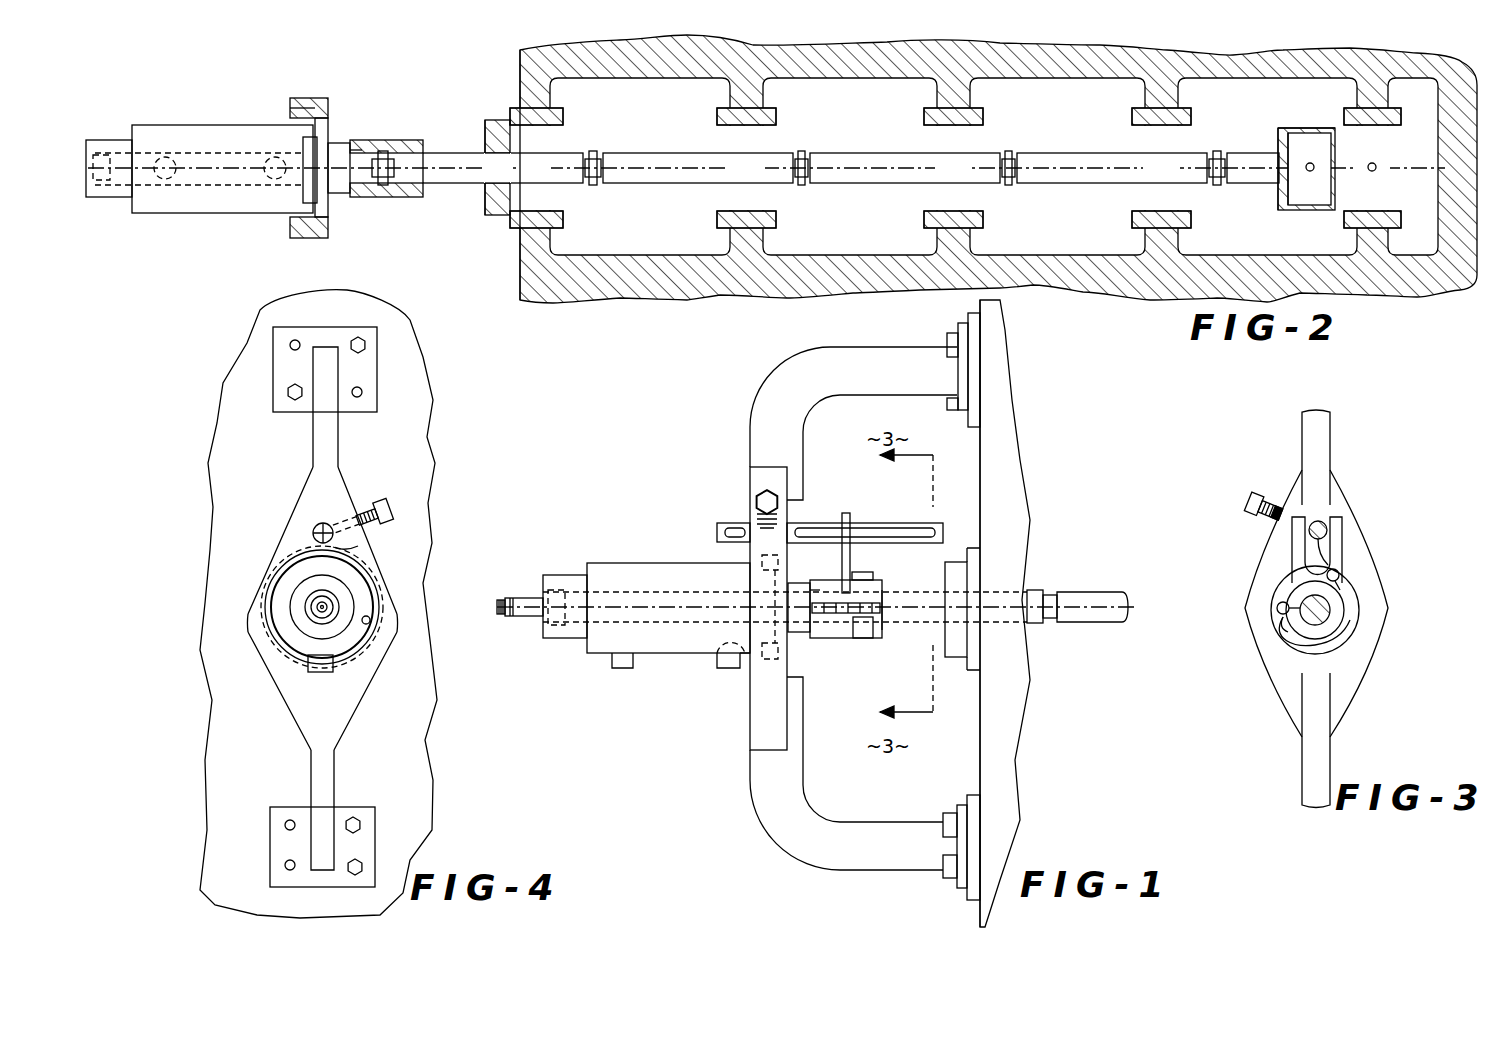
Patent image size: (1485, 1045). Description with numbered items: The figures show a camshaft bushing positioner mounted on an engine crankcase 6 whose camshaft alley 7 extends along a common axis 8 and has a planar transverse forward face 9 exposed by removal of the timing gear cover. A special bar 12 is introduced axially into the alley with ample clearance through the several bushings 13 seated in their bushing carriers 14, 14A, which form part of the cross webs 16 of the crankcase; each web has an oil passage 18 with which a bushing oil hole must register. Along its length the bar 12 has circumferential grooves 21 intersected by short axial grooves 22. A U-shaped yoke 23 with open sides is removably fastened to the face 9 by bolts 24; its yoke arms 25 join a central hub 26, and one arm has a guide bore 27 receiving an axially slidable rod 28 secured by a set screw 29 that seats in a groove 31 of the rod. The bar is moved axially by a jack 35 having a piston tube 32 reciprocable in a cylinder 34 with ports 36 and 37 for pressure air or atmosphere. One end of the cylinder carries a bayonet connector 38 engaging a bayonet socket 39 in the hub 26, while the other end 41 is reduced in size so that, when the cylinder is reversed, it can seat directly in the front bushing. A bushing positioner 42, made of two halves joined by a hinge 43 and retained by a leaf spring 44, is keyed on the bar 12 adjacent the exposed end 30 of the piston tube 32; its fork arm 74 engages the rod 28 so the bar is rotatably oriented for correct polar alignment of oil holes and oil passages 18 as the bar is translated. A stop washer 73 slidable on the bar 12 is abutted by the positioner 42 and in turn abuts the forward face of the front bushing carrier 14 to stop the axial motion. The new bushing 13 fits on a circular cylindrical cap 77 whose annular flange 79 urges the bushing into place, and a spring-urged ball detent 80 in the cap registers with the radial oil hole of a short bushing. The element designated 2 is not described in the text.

In FIG. 4, the wall plate 2 is at (318, 604).
In FIG. 2, the crankcase 6 is at (711, 299).
In FIG. 1, the crankcase 6 is at (1022, 768).
In FIG. 2, the camshaft alley 7 is at (608, 192).
In FIG. 2, the common axis 8 is at (850, 184).
In FIG. 1, the common axis 8 is at (1110, 592).
In FIG. 2, the forward face 9 is at (520, 268).
In FIG. 1, the forward face 9 is at (978, 762).
In FIG. 2, the bar 12 is at (1095, 187).
In FIG. 1, the bar 12 is at (1118, 633).
In FIG. 3, the bar 12 is at (1335, 617).
In FIG. 2, the bushing 13 is at (1326, 128).
In FIG. 2, the bushing carrier 14 is at (566, 118).
In FIG. 2, the bearing hub 14A is at (990, 118).
In FIG. 2, the cross web 16 is at (933, 90).
In FIG. 2, the oil passage 18 is at (1371, 172).
In FIG. 2, the circumferential groove 21 is at (392, 182).
In FIG. 1, the circumferential groove 21 is at (1053, 592).
In FIG. 2, the axial groove 22 is at (386, 158).
In FIG. 1, the yoke 23 is at (762, 806).
In FIG. 4, the yoke 23 is at (370, 705).
In FIG. 3, the yoke 23 is at (1297, 773).
In FIG. 1, the bolt 24 is at (947, 878).
In FIG. 4, the bolt 24 is at (360, 340).
In FIG. 1, the yoke arm 25 is at (752, 472).
In FIG. 4, the yoke arm 25 is at (332, 480).
In FIG. 3, the yoke arm 25 is at (1340, 500).
In FIG. 2, the central hub 26 is at (322, 98).
In FIG. 1, the central hub 26 is at (757, 577).
In FIG. 4, the central hub 26 is at (385, 600).
In FIG. 3, the central hub 26 is at (1250, 610).
In FIG. 4, the guide bore 27 is at (316, 527).
In FIG. 1, the rod 28 is at (717, 528).
In FIG. 4, the rod 28 is at (340, 547).
In FIG. 3, the rod 28 is at (1332, 560).
In FIG. 1, the set screw 29 is at (758, 494).
In FIG. 4, the set screw 29 is at (392, 505).
In FIG. 3, the set screw 29 is at (1250, 498).
In FIG. 2, the exposed end 30 is at (355, 149).
In FIG. 1, the exposed end 30 is at (812, 633).
In FIG. 1, the groove 31 is at (815, 523).
In FIG. 3, the groove 31 is at (1308, 530).
In FIG. 2, the piston tube 32 is at (340, 195).
In FIG. 1, the piston tube 32 is at (803, 633).
In FIG. 1, the cylinder 34 is at (615, 563).
In FIG. 2, the jack 35 is at (206, 215).
In FIG. 1, the jack 35 is at (645, 560).
In FIG. 4, the jack 35 is at (270, 620).
In FIG. 2, the port 36 is at (165, 157).
In FIG. 1, the port 36 is at (612, 668).
In FIG. 4, the port 36 is at (318, 672).
In FIG. 2, the port 37 is at (272, 157).
In FIG. 1, the port 37 is at (722, 668).
In FIG. 2, the bayonet connector 38 is at (314, 141).
In FIG. 1, the bayonet connector 38 is at (780, 565).
In FIG. 4, the bayonet connector 38 is at (296, 553).
In FIG. 2, the bayonet socket 39 is at (293, 112).
In FIG. 1, the bayonet socket 39 is at (712, 655).
In FIG. 4, the bayonet socket 39 is at (370, 622).
In FIG. 2, the reduced end portion 41 is at (112, 198).
In FIG. 1, the reduced end portion 41 is at (554, 575).
In FIG. 2, the bushing positioner 42 is at (426, 139).
In FIG. 1, the bushing positioner 42 is at (884, 628).
In FIG. 3, the bushing positioner 42 is at (1350, 595).
In FIG. 1, the hinge 43 is at (875, 600).
In FIG. 3, the hinge 43 is at (1278, 603).
In FIG. 1, the leaf spring 44 is at (870, 640).
In FIG. 3, the leaf spring 44 is at (1283, 630).
In FIG. 2, the stop washer 73 is at (495, 216).
In FIG. 1, the stop washer 73 is at (968, 657).
In FIG. 1, the fork arm 74 is at (850, 515).
In FIG. 3, the fork arm 74 is at (1292, 548).
In FIG. 2, the cap 77 is at (1300, 196).
In FIG. 2, the annular flange 79 is at (1280, 202).
In FIG. 2, the ball detent 80 is at (1308, 163).